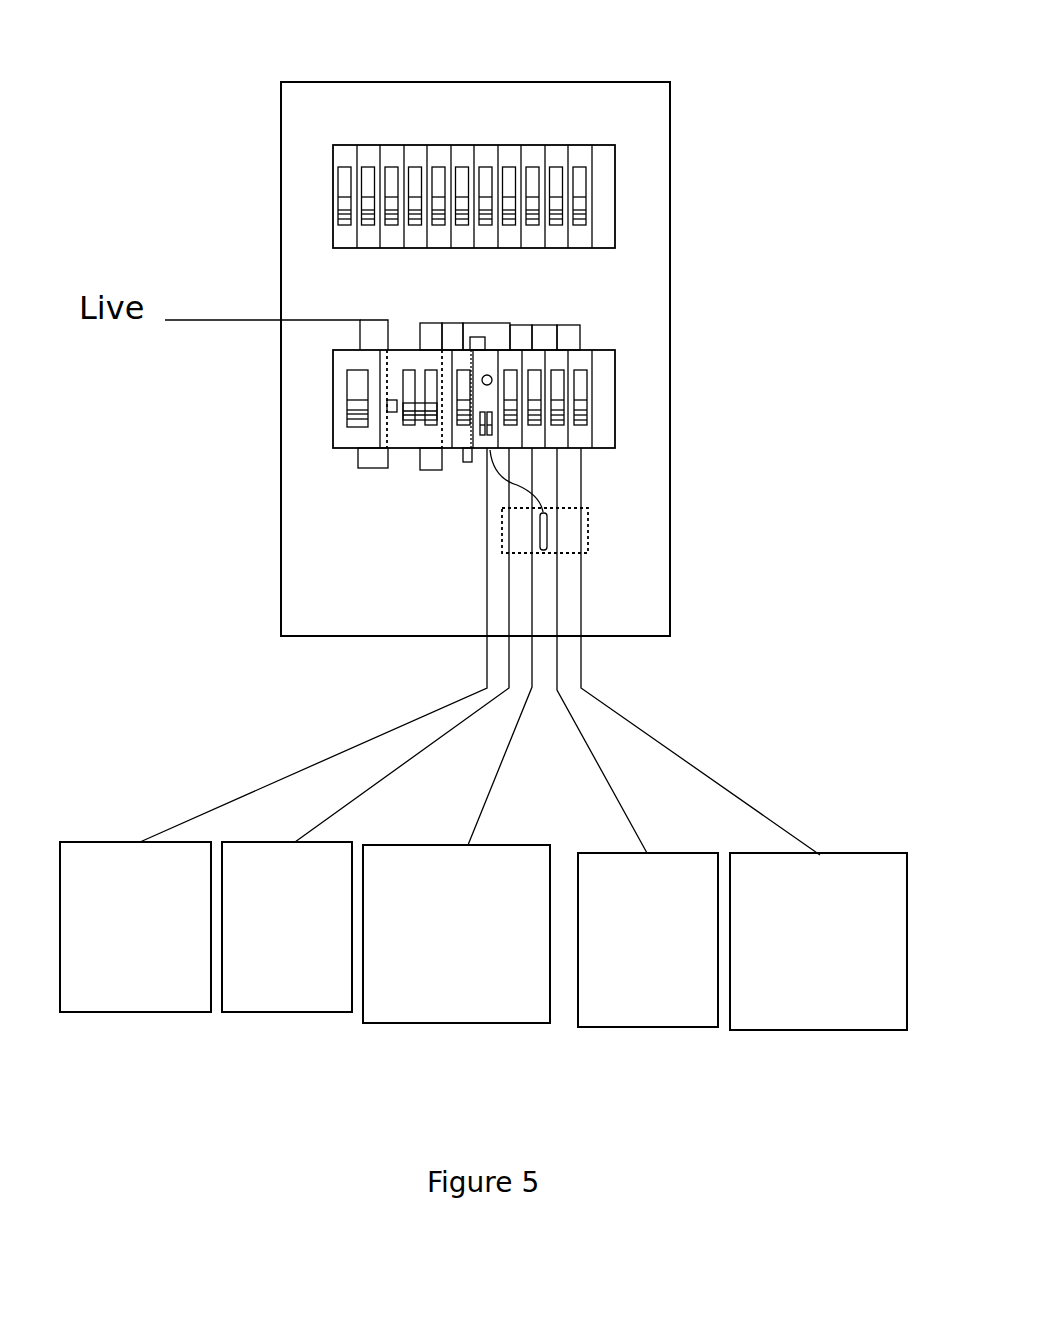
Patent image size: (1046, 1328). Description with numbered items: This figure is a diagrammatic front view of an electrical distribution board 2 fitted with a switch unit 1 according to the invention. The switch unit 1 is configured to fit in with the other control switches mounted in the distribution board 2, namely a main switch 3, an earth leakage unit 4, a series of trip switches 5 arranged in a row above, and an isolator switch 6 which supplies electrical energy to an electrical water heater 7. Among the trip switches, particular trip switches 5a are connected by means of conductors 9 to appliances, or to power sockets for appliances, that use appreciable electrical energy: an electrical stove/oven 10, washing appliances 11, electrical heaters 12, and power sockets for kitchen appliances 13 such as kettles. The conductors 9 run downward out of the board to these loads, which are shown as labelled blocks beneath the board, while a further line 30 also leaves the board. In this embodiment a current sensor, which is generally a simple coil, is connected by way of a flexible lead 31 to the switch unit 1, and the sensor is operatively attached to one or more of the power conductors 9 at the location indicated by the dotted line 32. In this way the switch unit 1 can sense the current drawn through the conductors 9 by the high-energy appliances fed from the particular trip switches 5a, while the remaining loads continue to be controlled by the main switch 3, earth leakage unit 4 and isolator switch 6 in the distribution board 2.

The switch unit 1 is at (485, 355).
The distribution board 2 is at (642, 207).
The main switch 3 is at (357, 377).
The earth leakage unit 4 is at (407, 437).
The trip switches 5 is at (372, 155).
The particular trip switches 5a is at (510, 357).
The isolator switch 6 is at (470, 360).
The electrical water heater 7 is at (123, 1005).
The conductors 9 is at (509, 610).
The electrical stove/oven 10 is at (287, 1005).
The washing appliances 11 is at (467, 1020).
The electrical heaters 12 is at (652, 1018).
The power sockets for kitchen appliances 13 is at (818, 1020).
The supply cable 30 is at (487, 533).
The flexible lead 31 is at (487, 480).
The dotted line 32 is at (588, 527).